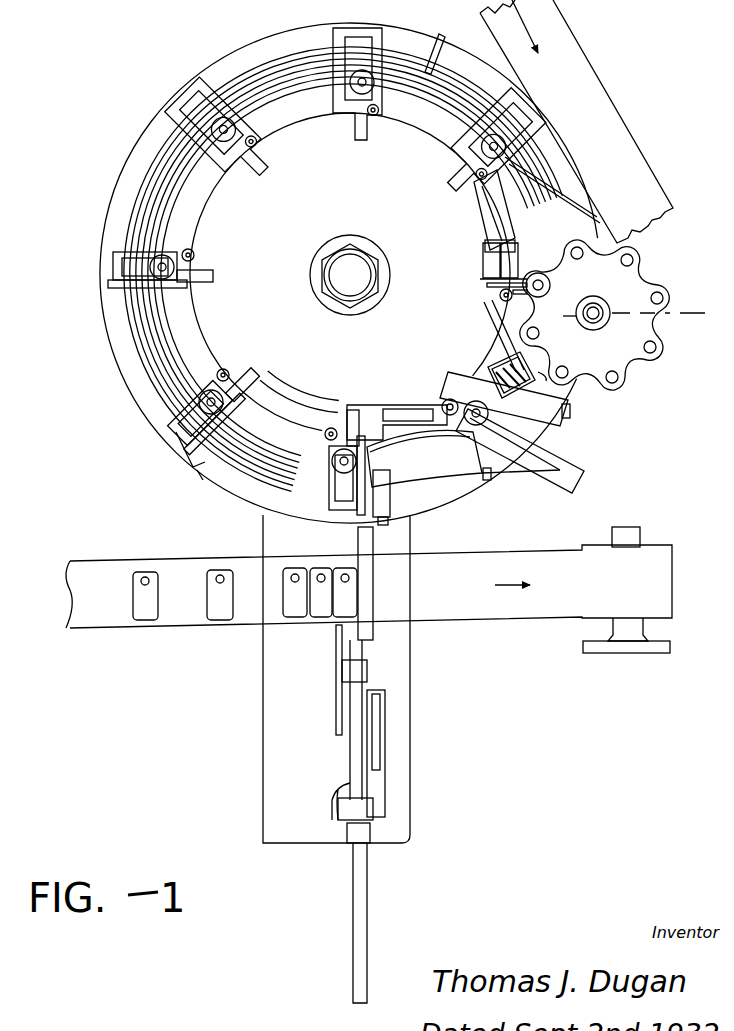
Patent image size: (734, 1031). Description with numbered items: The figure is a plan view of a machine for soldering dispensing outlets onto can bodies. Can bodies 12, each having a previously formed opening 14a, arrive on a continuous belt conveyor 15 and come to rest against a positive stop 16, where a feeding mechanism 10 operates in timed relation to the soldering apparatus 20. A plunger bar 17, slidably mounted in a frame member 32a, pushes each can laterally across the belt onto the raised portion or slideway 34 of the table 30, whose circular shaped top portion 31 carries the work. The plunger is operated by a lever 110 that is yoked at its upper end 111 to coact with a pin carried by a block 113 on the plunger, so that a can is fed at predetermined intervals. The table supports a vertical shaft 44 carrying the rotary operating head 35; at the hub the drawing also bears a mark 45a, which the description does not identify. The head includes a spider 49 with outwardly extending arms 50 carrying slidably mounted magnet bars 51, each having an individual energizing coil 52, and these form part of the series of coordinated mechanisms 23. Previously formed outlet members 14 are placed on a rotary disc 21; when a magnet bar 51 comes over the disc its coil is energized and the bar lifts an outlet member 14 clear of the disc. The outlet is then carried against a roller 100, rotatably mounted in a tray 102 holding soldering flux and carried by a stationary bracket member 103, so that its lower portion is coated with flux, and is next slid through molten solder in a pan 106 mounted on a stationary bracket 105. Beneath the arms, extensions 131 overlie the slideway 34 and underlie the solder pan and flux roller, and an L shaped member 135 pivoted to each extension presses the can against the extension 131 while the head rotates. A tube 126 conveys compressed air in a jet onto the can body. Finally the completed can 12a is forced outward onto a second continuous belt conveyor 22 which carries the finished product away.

The feeding mechanism 10 is at (405, 713).
The can bodies 12 is at (332, 328).
The completed can 12a is at (528, 116).
The dispensing outlet member 14 is at (657, 347).
The previously formed openings 14a is at (220, 578).
The continuous belt conveyor 15 is at (530, 618).
The positive stop 16 is at (373, 591).
The plunger bar 17 is at (362, 652).
The soldering apparatus 20 is at (147, 157).
The rotary disc 21 is at (640, 325).
The continuous belt conveyor 22 is at (612, 117).
The coordinated mechanisms 23 is at (242, 160).
The table 30 is at (112, 333).
The circular shaped top portion 31 is at (130, 355).
The frame member 32a is at (367, 672).
The raised portion 34 is at (132, 208).
The rotary operating head 35 is at (350, 272).
The vertical shaft 44 is at (358, 280).
The nut 45a is at (364, 256).
The spider 49 is at (349, 285).
The outwardly extending arms 50 is at (197, 258).
The magnet bar 51 is at (200, 400).
The energizing coil 52 is at (110, 280).
The roller 100 is at (514, 371).
The tray 102 is at (546, 369).
The stationary bracket member 103 is at (567, 397).
The stationary bracket 105 is at (496, 481).
The pan 106 is at (433, 470).
The lever 110 is at (380, 748).
The yoked upper end 111 is at (380, 797).
The block 113 is at (373, 820).
The tube 126 is at (434, 36).
The extension 131 is at (195, 467).
The L shaped member 135 is at (483, 208).